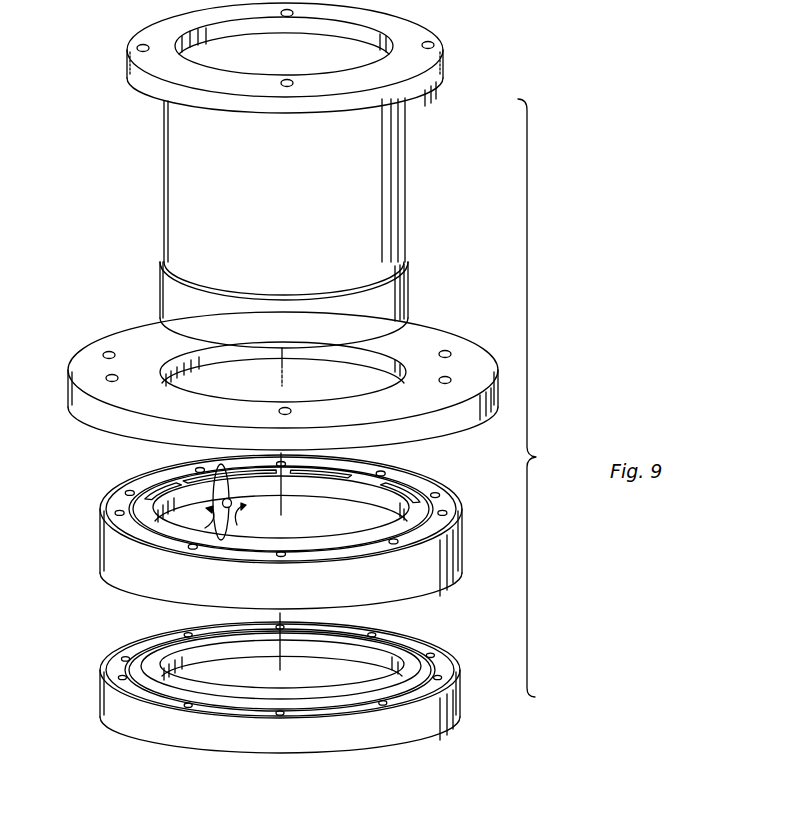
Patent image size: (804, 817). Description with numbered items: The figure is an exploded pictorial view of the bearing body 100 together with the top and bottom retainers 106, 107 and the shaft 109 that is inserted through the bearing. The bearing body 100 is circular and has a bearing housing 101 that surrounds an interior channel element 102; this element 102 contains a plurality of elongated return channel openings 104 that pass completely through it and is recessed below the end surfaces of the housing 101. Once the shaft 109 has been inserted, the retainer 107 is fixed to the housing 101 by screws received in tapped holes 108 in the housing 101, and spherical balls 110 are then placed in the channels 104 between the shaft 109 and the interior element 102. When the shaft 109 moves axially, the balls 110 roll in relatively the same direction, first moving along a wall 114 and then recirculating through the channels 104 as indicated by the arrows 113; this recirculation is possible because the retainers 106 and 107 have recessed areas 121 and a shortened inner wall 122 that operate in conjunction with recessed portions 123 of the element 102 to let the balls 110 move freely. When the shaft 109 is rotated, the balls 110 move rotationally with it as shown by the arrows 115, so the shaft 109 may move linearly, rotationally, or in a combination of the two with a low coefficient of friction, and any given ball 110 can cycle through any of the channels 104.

The bearing body 100 is at (460, 555).
The bearing housing 101 is at (448, 512).
The interior channel element 102 is at (390, 505).
The return channel openings 104 is at (427, 512).
The retainer 106 is at (500, 385).
The retainer 107 is at (448, 716).
The tapped holes 108 is at (195, 468).
The shaft 109 is at (407, 199).
The spherical balls 110 is at (221, 502).
The arrows 113 is at (229, 490).
The wall 114 is at (318, 507).
The arrows 115 is at (205, 528).
The recessed areas 121 is at (412, 660).
The shortened inner wall 122 is at (353, 661).
The recessed portions 123 is at (134, 490).